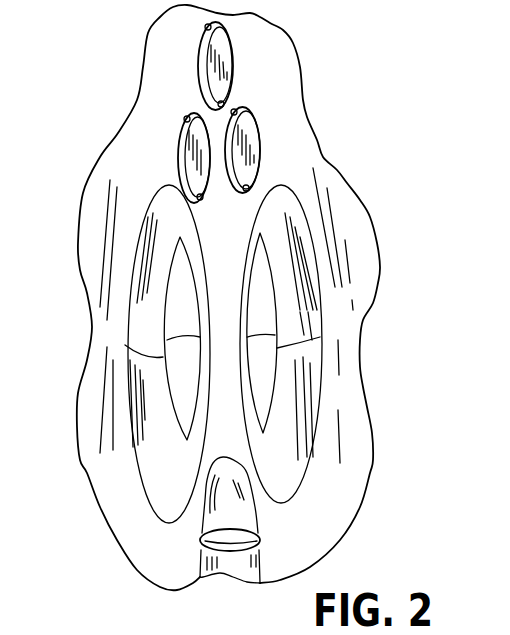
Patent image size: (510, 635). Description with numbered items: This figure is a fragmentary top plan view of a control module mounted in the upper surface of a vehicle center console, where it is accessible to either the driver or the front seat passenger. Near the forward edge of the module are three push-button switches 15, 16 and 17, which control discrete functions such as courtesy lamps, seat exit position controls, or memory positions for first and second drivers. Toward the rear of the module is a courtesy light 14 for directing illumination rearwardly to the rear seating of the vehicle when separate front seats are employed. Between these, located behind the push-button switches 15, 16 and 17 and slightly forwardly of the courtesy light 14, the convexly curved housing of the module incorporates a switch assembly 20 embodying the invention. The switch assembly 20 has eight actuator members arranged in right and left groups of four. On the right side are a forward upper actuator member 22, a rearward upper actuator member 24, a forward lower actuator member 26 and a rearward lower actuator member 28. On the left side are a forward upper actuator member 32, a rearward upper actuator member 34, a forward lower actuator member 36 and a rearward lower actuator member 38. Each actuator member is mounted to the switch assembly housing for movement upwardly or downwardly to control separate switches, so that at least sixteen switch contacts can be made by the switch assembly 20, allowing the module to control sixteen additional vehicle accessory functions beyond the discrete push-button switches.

The courtesy light 14 is at (259, 556).
The push-button switch 15 is at (228, 43).
The push-button switch 16 is at (182, 152).
The push-button switch 17 is at (252, 121).
The switch assembly 20 is at (336, 284).
The forward upper actuator member 22 is at (275, 323).
The rearward upper actuator member 24 is at (268, 398).
The forward lower actuator member 26 is at (293, 208).
The rearward lower actuator member 28 is at (310, 432).
The forward upper actuator member 32 is at (186, 261).
The rearward upper actuator member 34 is at (195, 410).
The forward lower actuator member 36 is at (130, 289).
The rearward lower actuator member 38 is at (140, 444).